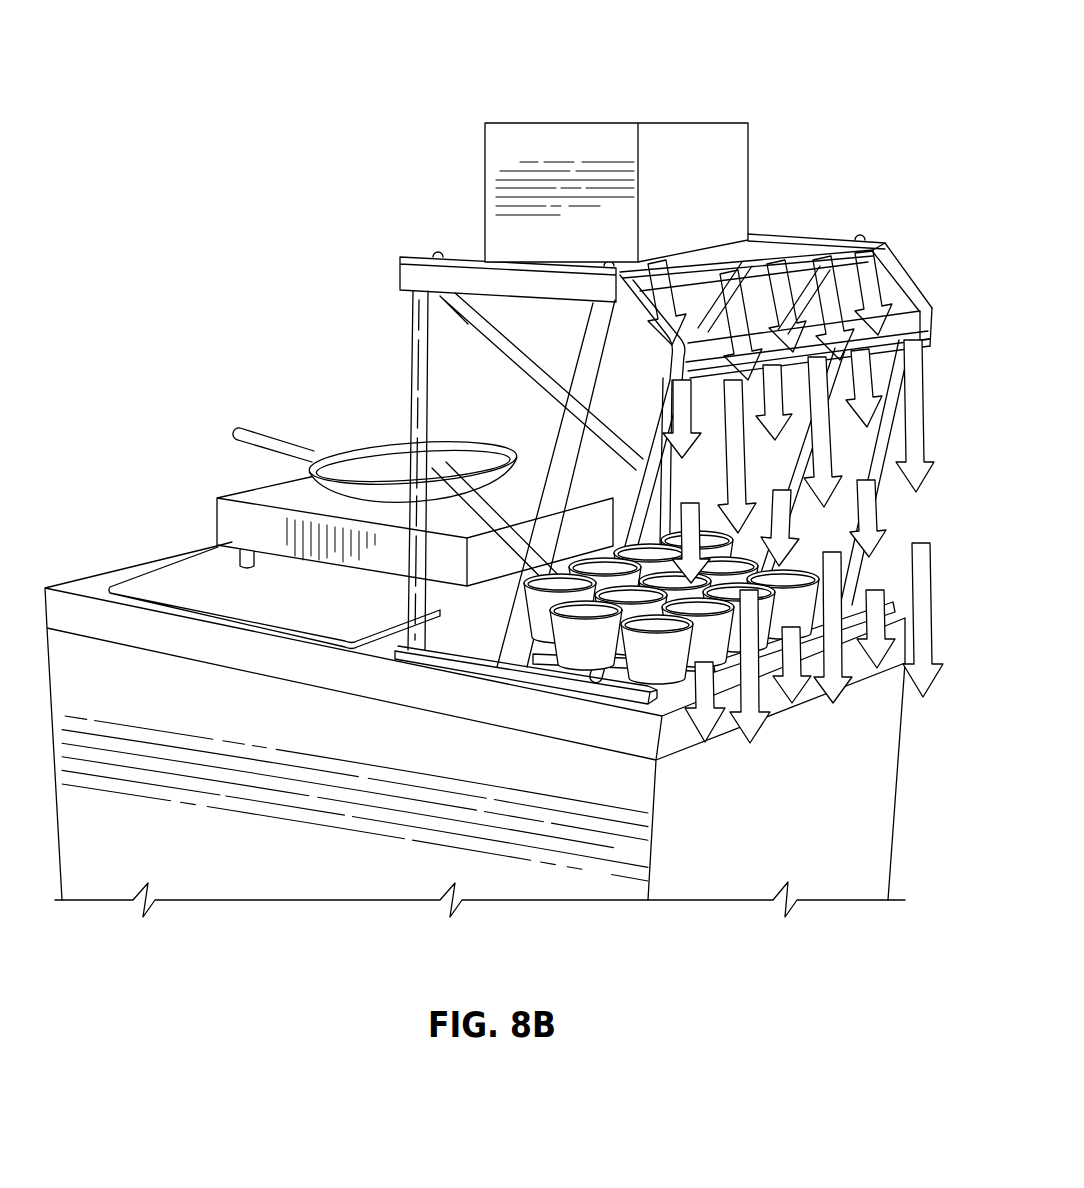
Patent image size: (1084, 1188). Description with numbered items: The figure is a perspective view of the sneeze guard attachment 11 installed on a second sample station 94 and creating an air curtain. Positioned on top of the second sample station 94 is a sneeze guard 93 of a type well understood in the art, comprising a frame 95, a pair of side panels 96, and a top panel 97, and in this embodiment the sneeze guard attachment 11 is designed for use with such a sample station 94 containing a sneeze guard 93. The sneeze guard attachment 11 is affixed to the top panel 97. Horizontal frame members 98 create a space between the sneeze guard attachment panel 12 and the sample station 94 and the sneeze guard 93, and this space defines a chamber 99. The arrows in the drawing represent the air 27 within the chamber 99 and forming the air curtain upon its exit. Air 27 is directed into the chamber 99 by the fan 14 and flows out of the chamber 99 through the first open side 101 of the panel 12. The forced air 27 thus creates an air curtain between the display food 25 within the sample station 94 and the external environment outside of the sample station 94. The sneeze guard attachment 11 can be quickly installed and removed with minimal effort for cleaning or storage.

The sneeze guard attachment 11 is at (827, 206).
The sneeze guard attachment panel 12 is at (781, 248).
The fan 14 is at (548, 123).
The display food 25 is at (672, 647).
The air 27 is at (910, 352).
The sneeze guard 93 is at (921, 249).
The second sample station 94 is at (356, 329).
The frame 95 is at (411, 430).
The side panels 96 is at (467, 624).
The top panel 97 is at (625, 341).
The horizontal frame members 98 is at (423, 272).
The chamber 99 is at (927, 313).
The first open side 101 is at (702, 378).